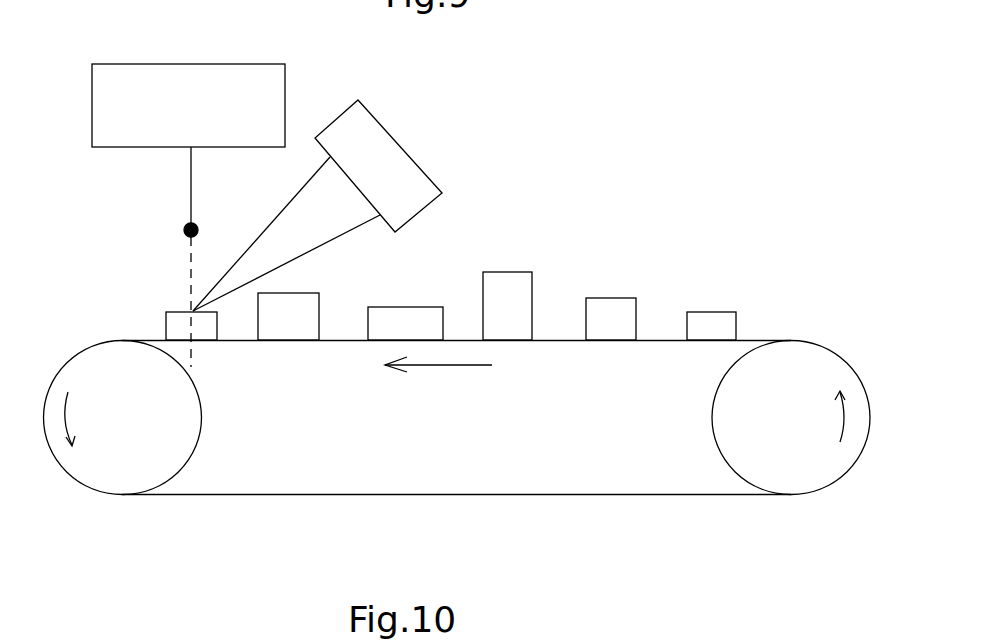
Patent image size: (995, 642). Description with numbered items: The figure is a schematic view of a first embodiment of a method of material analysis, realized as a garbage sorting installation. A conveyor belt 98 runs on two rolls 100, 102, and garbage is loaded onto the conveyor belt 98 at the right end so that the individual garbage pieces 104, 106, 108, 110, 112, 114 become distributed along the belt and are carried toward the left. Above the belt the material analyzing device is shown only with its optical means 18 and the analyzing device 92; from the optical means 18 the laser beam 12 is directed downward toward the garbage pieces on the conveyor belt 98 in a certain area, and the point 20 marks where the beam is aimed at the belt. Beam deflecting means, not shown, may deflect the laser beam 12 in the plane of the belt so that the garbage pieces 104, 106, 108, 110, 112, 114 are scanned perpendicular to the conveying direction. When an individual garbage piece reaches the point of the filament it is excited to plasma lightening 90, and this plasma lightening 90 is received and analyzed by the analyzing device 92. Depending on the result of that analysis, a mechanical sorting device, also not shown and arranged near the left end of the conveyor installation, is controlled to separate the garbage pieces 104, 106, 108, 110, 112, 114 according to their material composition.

The optical means 18 is at (216, 80).
The laser beam 12 is at (191, 182).
The measurement point 20 is at (185, 235).
The analyzing device 92 is at (390, 165).
The plasma lightening 90 is at (340, 197).
The conveyor belt 98 is at (580, 495).
The roll 100 is at (800, 357).
The roll 102 is at (112, 475).
The garbage piece 104 is at (170, 330).
The garbage piece 106 is at (282, 327).
The garbage piece 108 is at (422, 318).
The garbage piece 110 is at (510, 293).
The garbage piece 112 is at (613, 310).
The garbage piece 114 is at (705, 323).